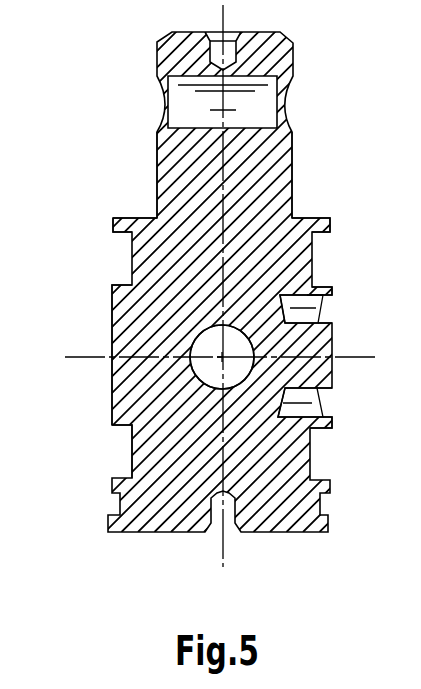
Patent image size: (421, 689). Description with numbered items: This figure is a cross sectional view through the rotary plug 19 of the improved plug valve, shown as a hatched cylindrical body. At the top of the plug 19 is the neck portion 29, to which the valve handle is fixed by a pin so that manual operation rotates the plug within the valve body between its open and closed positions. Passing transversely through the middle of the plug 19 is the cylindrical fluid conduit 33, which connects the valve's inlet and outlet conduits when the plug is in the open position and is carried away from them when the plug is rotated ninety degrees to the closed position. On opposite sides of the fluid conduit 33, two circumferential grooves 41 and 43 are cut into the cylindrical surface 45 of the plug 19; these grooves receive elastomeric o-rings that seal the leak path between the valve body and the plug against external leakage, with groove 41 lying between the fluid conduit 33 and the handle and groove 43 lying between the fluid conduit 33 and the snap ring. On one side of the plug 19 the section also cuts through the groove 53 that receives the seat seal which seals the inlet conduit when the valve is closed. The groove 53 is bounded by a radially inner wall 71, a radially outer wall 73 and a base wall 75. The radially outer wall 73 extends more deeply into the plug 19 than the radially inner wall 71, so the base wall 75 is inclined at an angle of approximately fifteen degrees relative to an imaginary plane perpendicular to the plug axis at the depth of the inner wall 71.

The plug 19 is at (275, 507).
The neck portion 29 is at (238, 172).
The groove 41 is at (118, 265).
The cylindrical surface 45 is at (113, 295).
The groove 43 is at (113, 448).
The fluid conduit 33 is at (207, 373).
The groove 53 is at (325, 308).
The radially inner wall 71 is at (325, 323).
The base wall 75 is at (323, 403).
The radially outer wall 73 is at (323, 412).